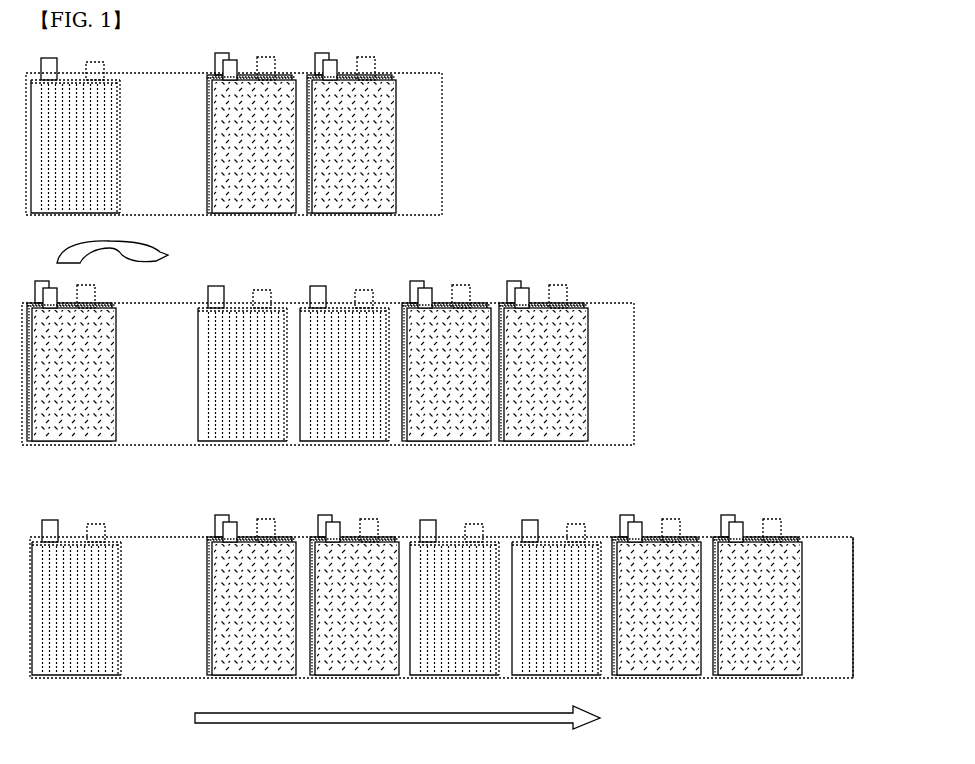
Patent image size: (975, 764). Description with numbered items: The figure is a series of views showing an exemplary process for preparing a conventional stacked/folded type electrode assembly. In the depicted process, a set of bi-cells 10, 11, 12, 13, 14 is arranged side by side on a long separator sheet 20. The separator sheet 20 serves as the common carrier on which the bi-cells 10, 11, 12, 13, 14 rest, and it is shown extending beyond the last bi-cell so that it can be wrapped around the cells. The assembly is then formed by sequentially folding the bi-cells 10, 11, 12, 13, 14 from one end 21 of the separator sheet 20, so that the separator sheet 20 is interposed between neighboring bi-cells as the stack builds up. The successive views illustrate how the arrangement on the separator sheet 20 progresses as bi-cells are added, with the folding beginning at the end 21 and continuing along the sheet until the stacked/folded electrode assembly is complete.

The bi-cell 10 is at (67, 399).
The bi-cell 11 is at (234, 402).
The bi-cell 12 is at (341, 402).
The bi-cell 13 is at (437, 399).
The bi-cell 14 is at (532, 399).
The separator sheet 20 is at (346, 326).
The end of the separator sheet 21 is at (460, 575).